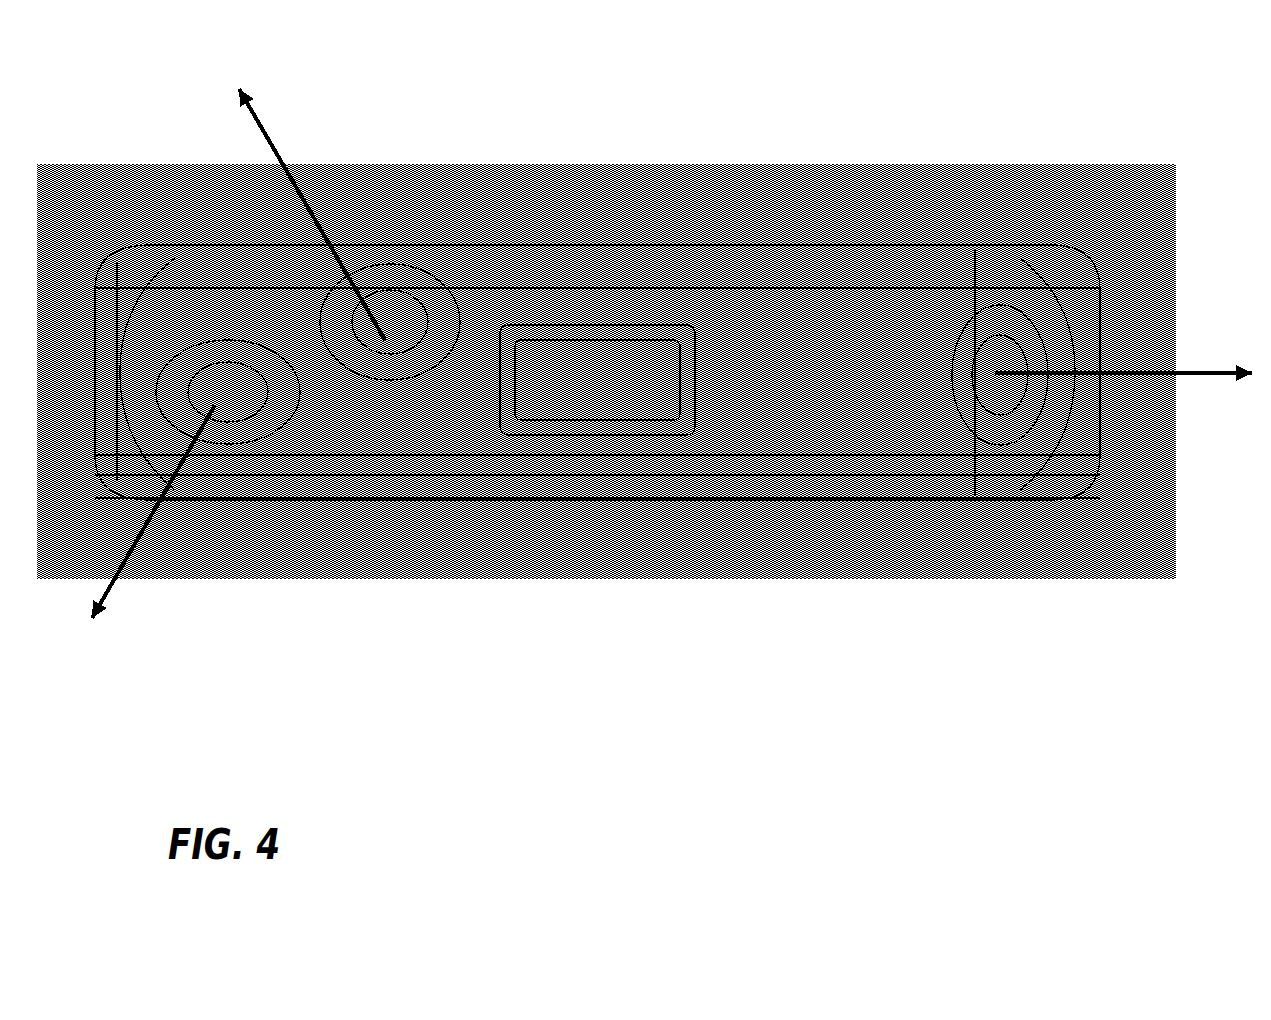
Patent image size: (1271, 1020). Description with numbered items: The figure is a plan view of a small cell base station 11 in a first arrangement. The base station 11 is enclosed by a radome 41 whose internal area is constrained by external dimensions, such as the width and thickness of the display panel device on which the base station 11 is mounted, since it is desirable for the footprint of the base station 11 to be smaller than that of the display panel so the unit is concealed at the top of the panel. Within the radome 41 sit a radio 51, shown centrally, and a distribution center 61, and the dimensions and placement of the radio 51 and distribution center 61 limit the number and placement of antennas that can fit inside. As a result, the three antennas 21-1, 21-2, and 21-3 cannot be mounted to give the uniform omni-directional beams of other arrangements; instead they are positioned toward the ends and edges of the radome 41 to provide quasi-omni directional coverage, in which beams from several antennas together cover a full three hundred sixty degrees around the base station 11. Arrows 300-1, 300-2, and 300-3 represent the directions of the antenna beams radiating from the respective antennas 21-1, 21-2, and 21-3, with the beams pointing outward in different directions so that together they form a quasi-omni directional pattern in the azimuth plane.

The small cell base station 11 is at (446, 81).
The antenna 21-1 is at (267, 464).
The antenna 21-2 is at (311, 294).
The antenna 21-3 is at (1015, 452).
The radome 41 is at (829, 489).
The radio 51 is at (670, 360).
The distribution center 61 is at (862, 296).
The arrow 300-1 is at (153, 514).
The arrow 300-2 is at (312, 214).
The arrow 300-3 is at (1123, 357).